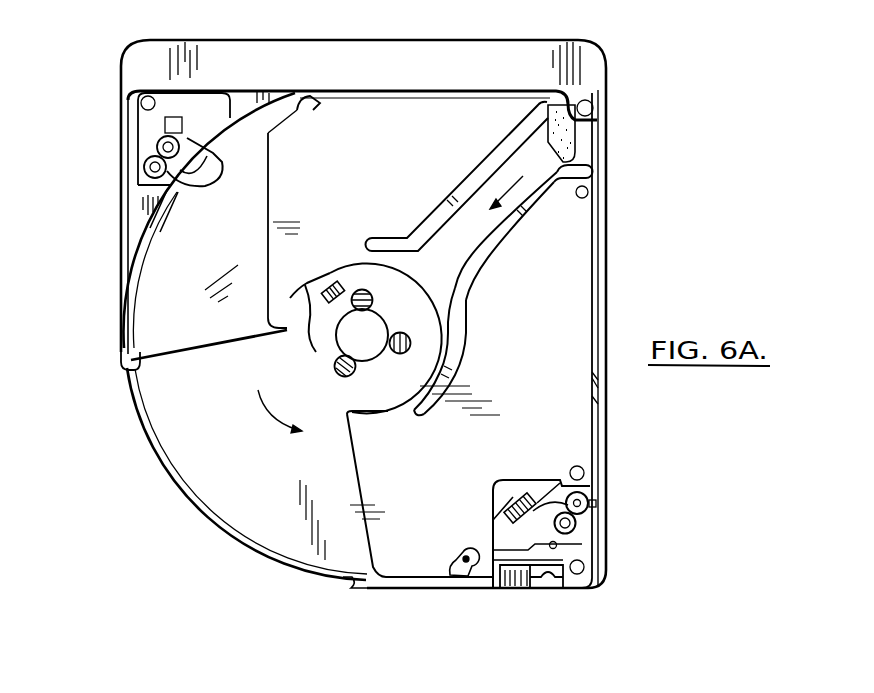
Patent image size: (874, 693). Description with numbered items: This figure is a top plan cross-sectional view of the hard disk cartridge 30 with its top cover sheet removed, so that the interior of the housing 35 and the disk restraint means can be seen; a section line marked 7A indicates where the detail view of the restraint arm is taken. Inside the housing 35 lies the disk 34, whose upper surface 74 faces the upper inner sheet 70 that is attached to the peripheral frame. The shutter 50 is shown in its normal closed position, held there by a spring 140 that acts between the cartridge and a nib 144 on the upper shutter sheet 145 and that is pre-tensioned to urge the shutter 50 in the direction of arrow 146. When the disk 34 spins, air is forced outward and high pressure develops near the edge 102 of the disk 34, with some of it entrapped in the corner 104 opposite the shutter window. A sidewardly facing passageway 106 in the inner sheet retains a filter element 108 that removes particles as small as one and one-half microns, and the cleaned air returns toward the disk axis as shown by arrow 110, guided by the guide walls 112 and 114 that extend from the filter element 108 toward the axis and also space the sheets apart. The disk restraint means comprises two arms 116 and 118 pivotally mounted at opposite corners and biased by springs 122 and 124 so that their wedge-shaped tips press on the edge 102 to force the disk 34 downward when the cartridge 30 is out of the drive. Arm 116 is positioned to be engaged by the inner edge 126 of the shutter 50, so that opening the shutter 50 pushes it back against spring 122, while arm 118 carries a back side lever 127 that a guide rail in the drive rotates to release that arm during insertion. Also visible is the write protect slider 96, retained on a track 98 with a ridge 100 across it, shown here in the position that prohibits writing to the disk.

The hard disk cartridge 30 is at (118, 214).
The disk 34 is at (167, 291).
The housing 35 is at (420, 30).
The shutter 50 is at (288, 541).
The upper inner sheet 70 is at (458, 110).
The upper surface of the disk 74 is at (272, 218).
The write protect slider 96 is at (513, 590).
The track 98 is at (553, 578).
The ridge 100 is at (538, 590).
The edge of the disk 102 is at (303, 111).
The corner of the cartridge 104 is at (586, 98).
The passageway 106 is at (562, 166).
The filter element 108 is at (565, 135).
The arrow 110 is at (522, 190).
The guide wall 112 is at (468, 275).
The guide wall 114 is at (428, 222).
The arm 116 is at (192, 194).
The arm 118 is at (543, 480).
The spring 122 is at (157, 146).
The spring 124 is at (576, 524).
The inner edge of the shutter 126 is at (128, 352).
The back side lever 127 is at (595, 503).
The spring 140 is at (400, 352).
The nib 144 is at (348, 328).
The upper shutter sheet 145 is at (220, 425).
The arrow 146 is at (271, 426).
The section line 7A- 7A is at (201, 136).